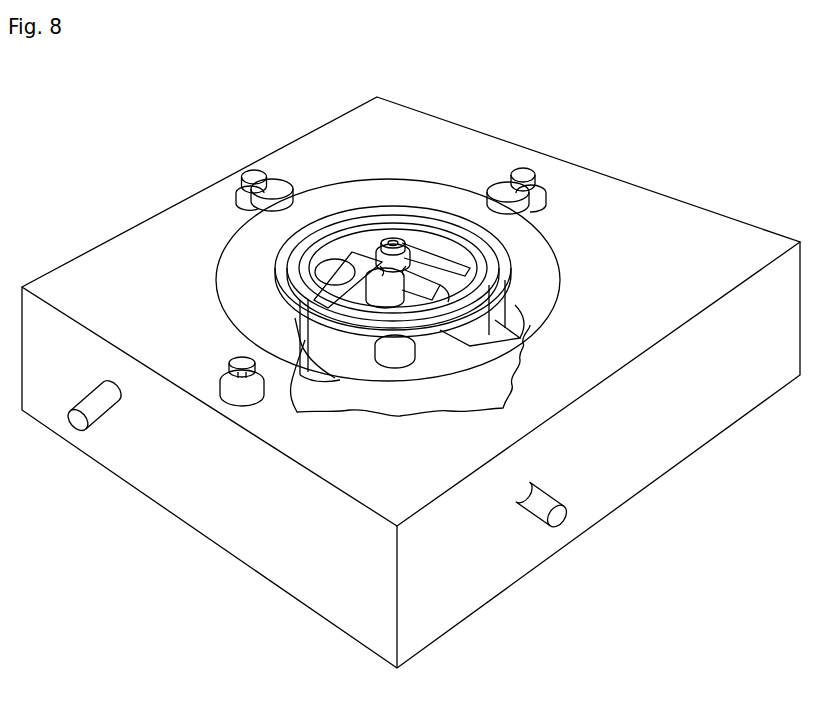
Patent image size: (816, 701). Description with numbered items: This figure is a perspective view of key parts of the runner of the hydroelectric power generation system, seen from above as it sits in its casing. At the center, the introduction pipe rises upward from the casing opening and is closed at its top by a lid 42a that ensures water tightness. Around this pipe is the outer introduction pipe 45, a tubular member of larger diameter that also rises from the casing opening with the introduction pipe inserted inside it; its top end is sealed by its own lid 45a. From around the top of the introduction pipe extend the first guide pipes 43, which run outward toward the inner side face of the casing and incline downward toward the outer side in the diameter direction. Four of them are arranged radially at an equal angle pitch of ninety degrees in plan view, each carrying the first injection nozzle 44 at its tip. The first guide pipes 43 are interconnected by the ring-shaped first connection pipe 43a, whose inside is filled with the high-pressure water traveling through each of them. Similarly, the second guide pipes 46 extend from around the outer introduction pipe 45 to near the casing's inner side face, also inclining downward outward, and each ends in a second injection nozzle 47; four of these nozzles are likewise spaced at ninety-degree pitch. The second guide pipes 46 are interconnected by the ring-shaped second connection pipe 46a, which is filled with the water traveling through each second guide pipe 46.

The lid 42a is at (392, 240).
The first guide pipe 43 is at (322, 300).
The first connection pipe 43a is at (295, 288).
The first injection nozzle 44 is at (303, 332).
The outer introduction pipe 45 is at (390, 350).
The lid 45a is at (412, 270).
The second guide pipe 46 is at (405, 296).
The second connection pipe 46a is at (338, 262).
The second injection nozzle 47 is at (486, 337).